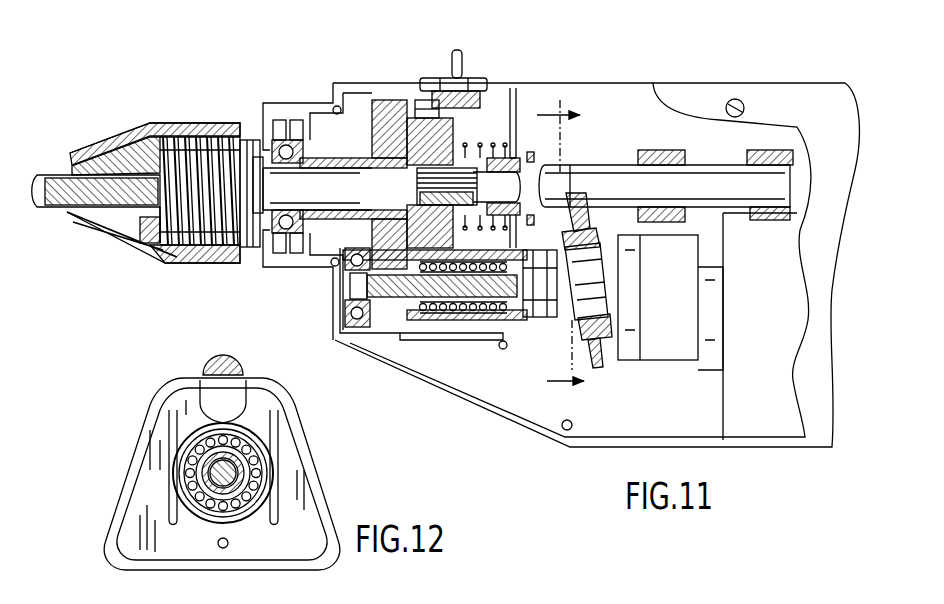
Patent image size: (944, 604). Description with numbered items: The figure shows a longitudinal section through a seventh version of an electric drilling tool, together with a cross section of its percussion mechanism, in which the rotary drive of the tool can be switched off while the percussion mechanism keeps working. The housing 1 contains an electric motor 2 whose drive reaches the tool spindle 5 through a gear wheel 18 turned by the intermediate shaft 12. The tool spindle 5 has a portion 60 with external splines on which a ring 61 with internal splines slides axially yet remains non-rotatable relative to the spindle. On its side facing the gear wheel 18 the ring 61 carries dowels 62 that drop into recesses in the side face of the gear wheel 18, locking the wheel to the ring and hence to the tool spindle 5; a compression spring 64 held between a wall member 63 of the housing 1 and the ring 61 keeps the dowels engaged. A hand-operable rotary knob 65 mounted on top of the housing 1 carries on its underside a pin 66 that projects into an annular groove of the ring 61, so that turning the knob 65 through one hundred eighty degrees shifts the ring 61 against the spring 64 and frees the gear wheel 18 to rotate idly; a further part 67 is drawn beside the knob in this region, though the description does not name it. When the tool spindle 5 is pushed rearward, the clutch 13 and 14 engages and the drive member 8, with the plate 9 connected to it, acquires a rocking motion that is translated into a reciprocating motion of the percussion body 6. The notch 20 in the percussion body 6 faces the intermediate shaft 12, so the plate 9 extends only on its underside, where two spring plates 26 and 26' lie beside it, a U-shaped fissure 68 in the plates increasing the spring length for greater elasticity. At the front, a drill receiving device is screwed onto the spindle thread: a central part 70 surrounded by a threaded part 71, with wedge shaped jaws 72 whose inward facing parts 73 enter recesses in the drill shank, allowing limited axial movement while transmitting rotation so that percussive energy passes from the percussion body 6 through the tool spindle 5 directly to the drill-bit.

In FIG. 11, the housing 1 is at (633, 83).
In FIG. 11, the electric motor 2 is at (753, 418).
In FIG. 11, the tool spindle 5 is at (327, 86).
In FIG. 11, the percussion body 6 is at (716, 165).
In FIG. 11, the drive member 8 is at (617, 340).
In FIG. 11, the plate 9 is at (40, 175).
In FIG. 12, the plate 9 is at (270, 400).
In FIG. 11, the intermediate shaft 12 is at (393, 330).
In FIG. 11, the clutch 13 is at (543, 322).
In FIG. 11, the clutch 14 is at (545, 330).
In FIG. 11, the gear wheel 18 is at (358, 93).
In FIG. 11, the notch 20 is at (553, 110).
In FIG. 11, the spring plate 26 is at (512, 360).
In FIG. 12, the spring plate 26 is at (258, 467).
In FIG. 12, the spring plate 26' is at (251, 355).
In FIG. 11, the portion with external splines 60 is at (477, 165).
In FIG. 11, the ring with internal splines 61 is at (413, 118).
In FIG. 11, the dowels 62 is at (394, 100).
In FIG. 11, the wall member 63 is at (515, 135).
In FIG. 11, the compression spring 64 is at (487, 118).
In FIG. 11, the rotary knob 65 is at (466, 78).
In FIG. 11, the pin 66 is at (454, 50).
In FIG. 11, the ring 67 is at (438, 100).
In FIG. 12, the U-shaped fissure 68 is at (262, 432).
In FIG. 11, the central part 70 is at (185, 262).
In FIG. 11, the threaded part 71 is at (206, 262).
In FIG. 11, the wedge shaped jaws 72 is at (102, 243).
In FIG. 11, the inward facing parts 73 is at (112, 140).